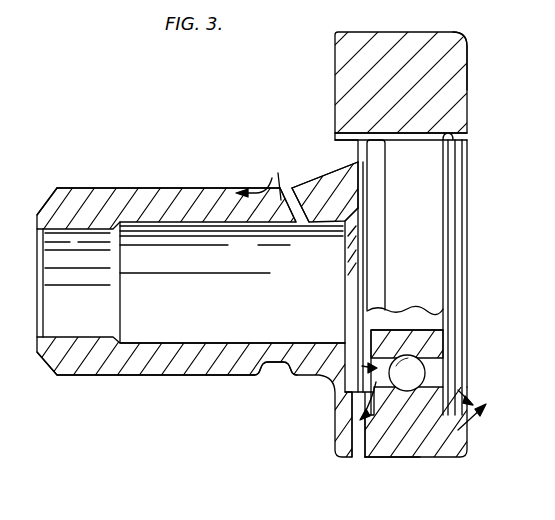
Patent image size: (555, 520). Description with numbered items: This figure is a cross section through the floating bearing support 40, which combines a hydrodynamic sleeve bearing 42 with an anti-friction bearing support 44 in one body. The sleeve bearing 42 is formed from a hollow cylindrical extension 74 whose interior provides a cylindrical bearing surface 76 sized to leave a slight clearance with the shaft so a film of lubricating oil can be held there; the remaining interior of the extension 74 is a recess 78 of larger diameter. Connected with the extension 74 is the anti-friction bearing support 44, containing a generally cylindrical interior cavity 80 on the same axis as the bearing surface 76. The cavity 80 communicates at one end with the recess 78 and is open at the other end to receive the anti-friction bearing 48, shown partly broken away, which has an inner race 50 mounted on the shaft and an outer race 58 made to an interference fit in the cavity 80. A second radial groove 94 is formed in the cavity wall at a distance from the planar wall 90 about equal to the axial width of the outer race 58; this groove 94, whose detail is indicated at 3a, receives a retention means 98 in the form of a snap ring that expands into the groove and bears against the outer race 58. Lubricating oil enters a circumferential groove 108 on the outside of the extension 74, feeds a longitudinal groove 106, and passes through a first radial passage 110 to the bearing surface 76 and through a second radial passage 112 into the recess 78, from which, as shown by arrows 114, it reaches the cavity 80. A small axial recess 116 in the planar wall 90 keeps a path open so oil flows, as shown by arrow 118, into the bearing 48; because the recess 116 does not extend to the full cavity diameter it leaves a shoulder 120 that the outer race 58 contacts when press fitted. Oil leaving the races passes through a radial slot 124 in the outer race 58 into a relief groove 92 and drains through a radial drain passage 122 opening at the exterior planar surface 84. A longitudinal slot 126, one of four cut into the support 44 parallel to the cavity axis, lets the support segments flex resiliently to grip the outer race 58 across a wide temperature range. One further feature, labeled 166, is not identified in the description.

The floating bearing support 40 is at (285, 151).
The hydrodynamic sleeve bearing 42 is at (100, 190).
The anti-friction bearing support 44 is at (389, 37).
The anti-friction bearing 48 is at (448, 326).
The inner race 50 is at (441, 351).
The outer race 58 is at (412, 414).
The hollow cylindrical extension 74 is at (128, 372).
The cylindrical bearing surface 76 is at (107, 312).
The recess 78 is at (240, 222).
The interior cavity 80 is at (430, 184).
The exterior planar surface 84 is at (342, 459).
The planar wall 90 is at (341, 171).
The relief groove 92 is at (377, 231).
The second radial groove 94 is at (448, 236).
The retention means 98 is at (427, 372).
The longitudinal groove 106 is at (163, 191).
The circumferential groove 108 is at (286, 371).
The first radial passage 110 is at (69, 227).
The second radial passage 112 is at (296, 224).
The arrows 114 is at (323, 296).
The axial recess 116 is at (345, 390).
The arrow 118 is at (361, 364).
The shoulder 120 is at (337, 157).
The drain passage 122 is at (362, 448).
The radial slot 124 is at (390, 459).
The longitudinal slot 126 is at (468, 136).
The rounded edge 166 is at (470, 76).
The detail view indicator 3a is at (480, 410).